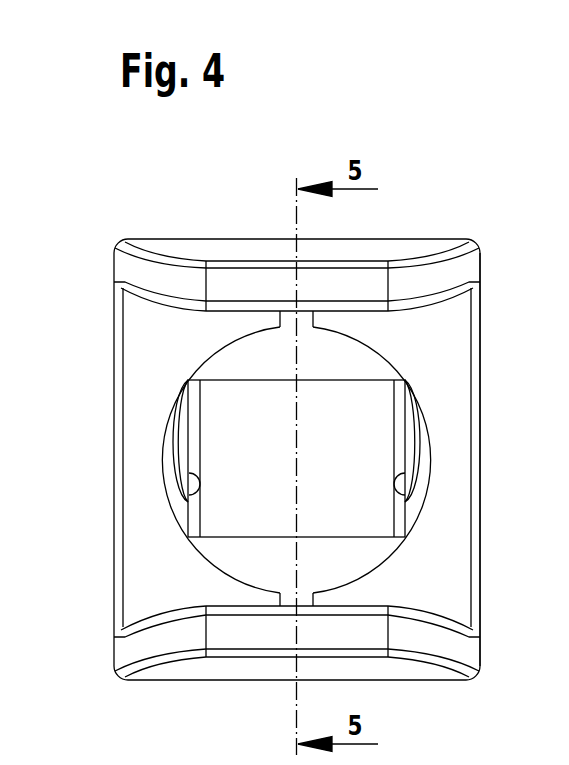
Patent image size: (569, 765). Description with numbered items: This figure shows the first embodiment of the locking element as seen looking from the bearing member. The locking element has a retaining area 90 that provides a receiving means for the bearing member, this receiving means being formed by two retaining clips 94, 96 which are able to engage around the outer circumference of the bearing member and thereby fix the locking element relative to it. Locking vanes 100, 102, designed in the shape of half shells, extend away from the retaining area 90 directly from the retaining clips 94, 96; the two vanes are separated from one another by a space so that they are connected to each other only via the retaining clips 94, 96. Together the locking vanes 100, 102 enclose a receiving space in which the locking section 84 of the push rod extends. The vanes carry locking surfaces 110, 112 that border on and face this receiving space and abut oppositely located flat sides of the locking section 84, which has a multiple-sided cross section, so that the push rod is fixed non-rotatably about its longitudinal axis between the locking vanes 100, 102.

The locking section 84 is at (230, 407).
The retaining area 90 is at (150, 571).
The retaining clip 94 is at (240, 278).
The retaining clip 96 is at (253, 633).
The locking vane 100 is at (140, 454).
The locking vane 102 is at (453, 446).
The locking surface 110 is at (185, 500).
The locking surface 112 is at (400, 502).